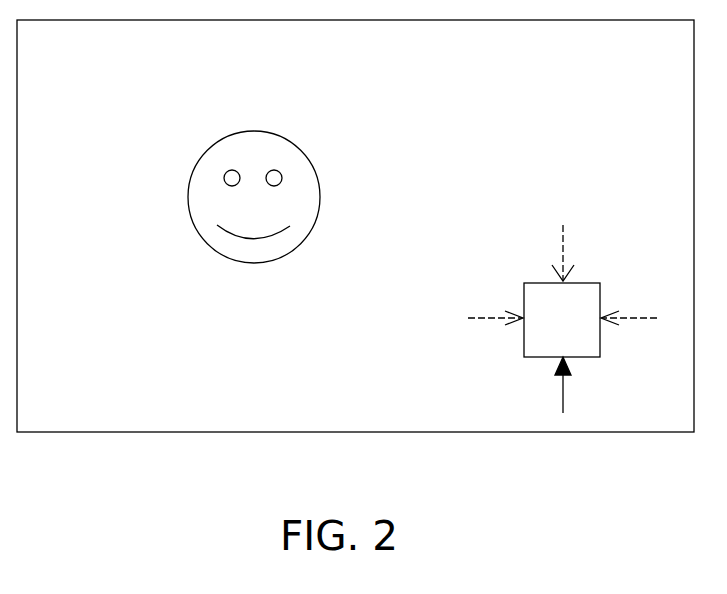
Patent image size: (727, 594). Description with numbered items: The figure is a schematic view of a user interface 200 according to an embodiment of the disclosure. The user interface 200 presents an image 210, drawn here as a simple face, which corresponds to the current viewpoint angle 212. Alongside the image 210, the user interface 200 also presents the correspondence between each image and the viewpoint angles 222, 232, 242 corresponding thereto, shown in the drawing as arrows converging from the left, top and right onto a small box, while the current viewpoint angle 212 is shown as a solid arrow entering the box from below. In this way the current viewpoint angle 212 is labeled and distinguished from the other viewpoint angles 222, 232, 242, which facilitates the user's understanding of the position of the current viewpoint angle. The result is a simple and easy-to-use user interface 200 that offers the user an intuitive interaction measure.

The user interface 200 is at (587, 339).
The image 210 is at (302, 150).
The current viewpoint angle 212 is at (562, 398).
The viewpoint angle 222 is at (490, 320).
The viewpoint angle 232 is at (563, 245).
The viewpoint angle 242 is at (658, 303).